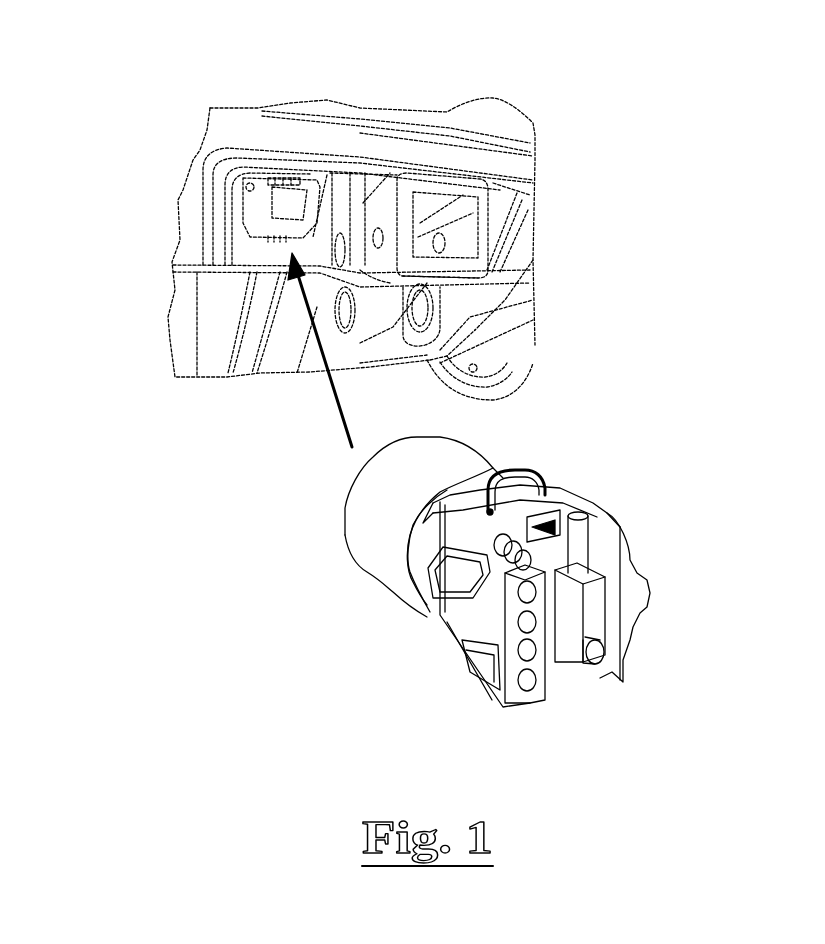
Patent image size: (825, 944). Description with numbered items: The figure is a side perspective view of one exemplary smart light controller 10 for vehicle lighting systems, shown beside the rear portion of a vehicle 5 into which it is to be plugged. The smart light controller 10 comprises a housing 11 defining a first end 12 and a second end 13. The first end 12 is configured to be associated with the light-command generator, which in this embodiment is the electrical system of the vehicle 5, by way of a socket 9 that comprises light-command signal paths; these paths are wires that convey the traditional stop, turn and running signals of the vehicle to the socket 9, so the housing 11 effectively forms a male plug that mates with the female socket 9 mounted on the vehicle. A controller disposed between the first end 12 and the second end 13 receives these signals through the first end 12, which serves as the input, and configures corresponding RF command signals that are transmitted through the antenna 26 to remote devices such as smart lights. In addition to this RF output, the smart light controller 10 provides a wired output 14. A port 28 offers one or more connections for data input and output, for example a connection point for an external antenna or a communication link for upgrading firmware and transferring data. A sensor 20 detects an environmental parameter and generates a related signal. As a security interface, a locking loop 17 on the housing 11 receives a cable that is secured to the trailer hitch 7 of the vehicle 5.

The vehicle 5 is at (400, 229).
The trailer hitch 7 is at (483, 263).
The socket 9 is at (273, 212).
The smart light controller 10 is at (487, 574).
The housing 11 is at (352, 518).
The first end 12 is at (340, 472).
The second end 13 is at (655, 630).
The wired output 14 is at (532, 695).
The locking loop 17 is at (487, 488).
The sensor 20 is at (600, 667).
The antenna 26 is at (580, 540).
The port 28 is at (558, 512).